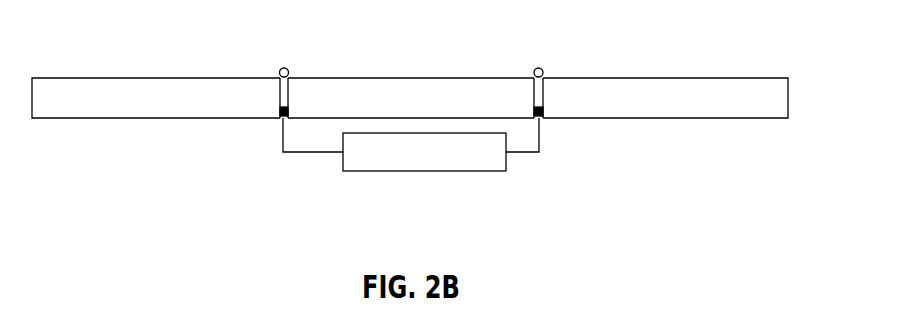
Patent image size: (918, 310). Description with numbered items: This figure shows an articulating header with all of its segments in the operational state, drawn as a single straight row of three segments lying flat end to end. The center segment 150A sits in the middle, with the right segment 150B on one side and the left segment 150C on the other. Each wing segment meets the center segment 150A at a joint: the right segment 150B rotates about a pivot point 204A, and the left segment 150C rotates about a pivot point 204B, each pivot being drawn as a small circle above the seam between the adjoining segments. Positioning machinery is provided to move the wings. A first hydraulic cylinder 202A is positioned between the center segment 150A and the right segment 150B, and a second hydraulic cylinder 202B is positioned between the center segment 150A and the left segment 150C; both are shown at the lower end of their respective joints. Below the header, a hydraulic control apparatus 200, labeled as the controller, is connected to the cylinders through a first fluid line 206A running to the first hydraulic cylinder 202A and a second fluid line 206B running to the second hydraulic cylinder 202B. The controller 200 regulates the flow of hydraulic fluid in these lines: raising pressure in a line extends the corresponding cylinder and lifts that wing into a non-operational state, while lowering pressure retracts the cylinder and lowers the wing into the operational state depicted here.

The center segment 150A is at (412, 78).
The right segment 150B is at (147, 78).
The left segment 150C is at (666, 78).
The hydraulic control apparatus 200 is at (440, 171).
The first hydraulic cylinder 202A is at (278, 114).
The second hydraulic cylinder 202B is at (546, 114).
The pivot point 204A is at (284, 68).
The pivot point 204B is at (538, 68).
The first fluid line 206A is at (327, 153).
The second fluid line 206B is at (507, 155).